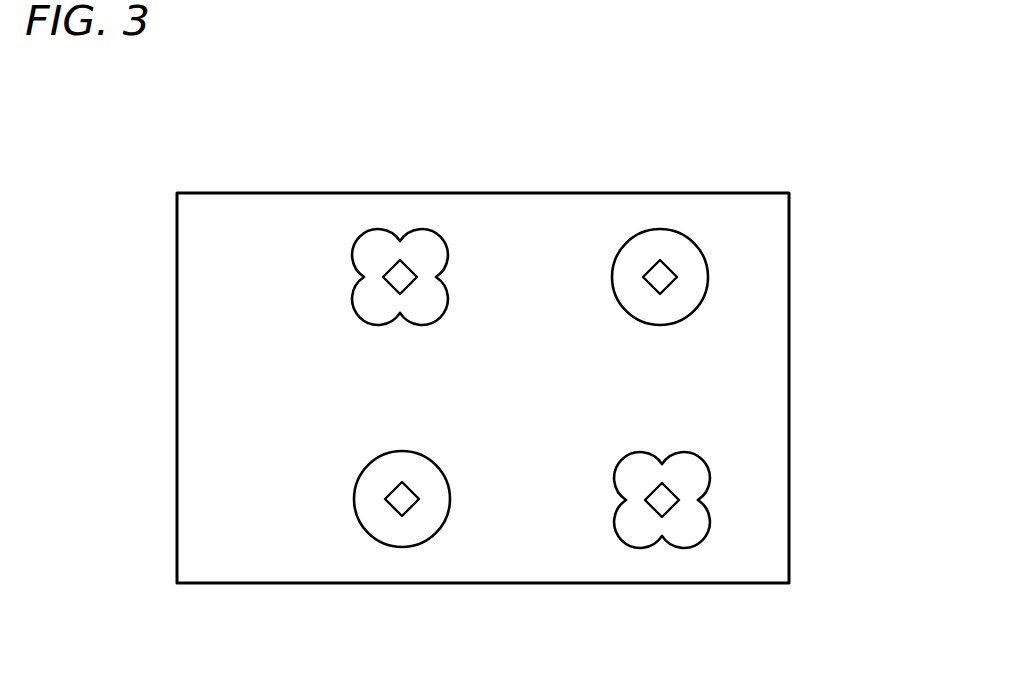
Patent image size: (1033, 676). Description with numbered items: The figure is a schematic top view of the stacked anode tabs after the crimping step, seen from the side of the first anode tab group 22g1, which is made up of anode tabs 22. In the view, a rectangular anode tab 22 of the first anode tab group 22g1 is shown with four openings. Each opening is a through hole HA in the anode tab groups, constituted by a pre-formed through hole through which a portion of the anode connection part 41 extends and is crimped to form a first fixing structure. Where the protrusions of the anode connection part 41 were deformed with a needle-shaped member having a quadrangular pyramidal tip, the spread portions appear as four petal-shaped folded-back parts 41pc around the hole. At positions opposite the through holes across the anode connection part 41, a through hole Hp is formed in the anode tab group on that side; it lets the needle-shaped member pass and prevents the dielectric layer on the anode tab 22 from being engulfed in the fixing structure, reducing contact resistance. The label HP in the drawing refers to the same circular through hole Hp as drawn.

The first anode tab group 22g1 is at (237, 202).
The anode tab 22 is at (483, 357).
The through hole HA is at (400, 272).
The anode connection part 41 is at (723, 272).
The through hole Hp is at (708, 265).
The circular alignment mark opening HP is at (362, 525).
The folded-back part 41pc is at (693, 477).